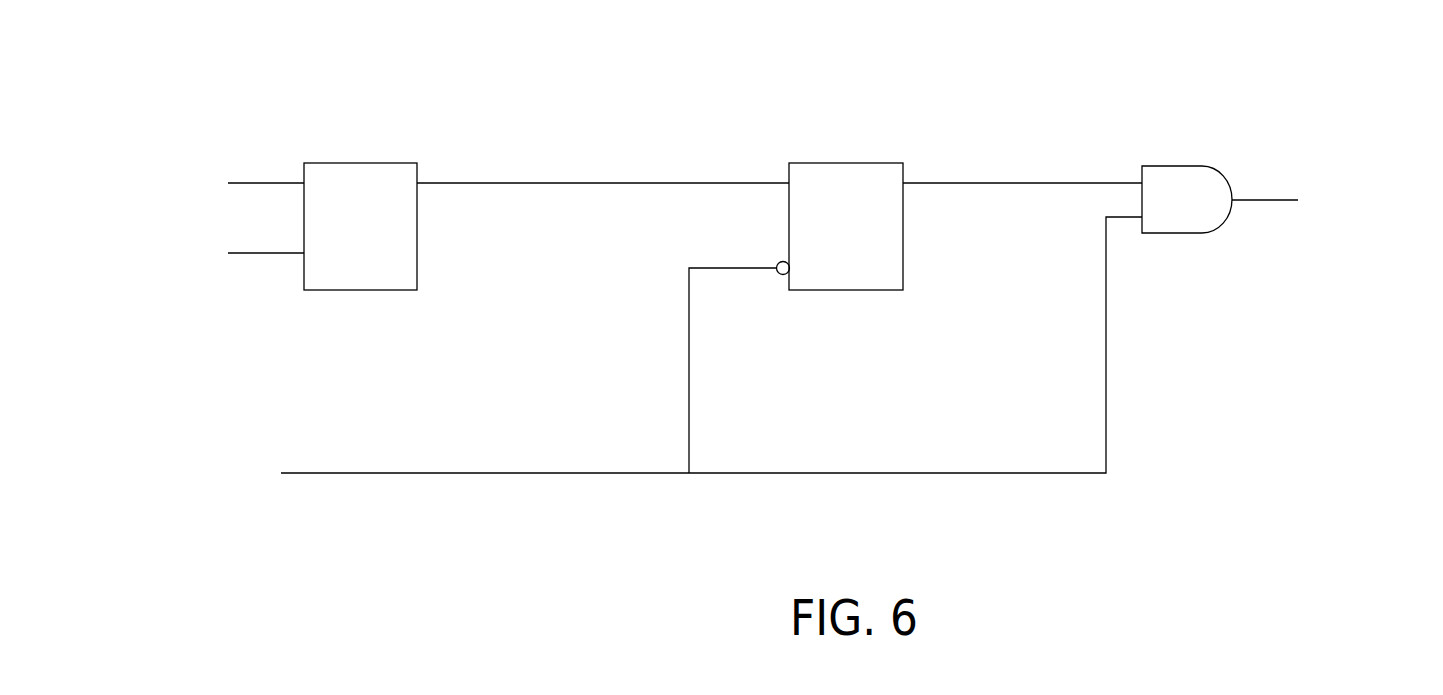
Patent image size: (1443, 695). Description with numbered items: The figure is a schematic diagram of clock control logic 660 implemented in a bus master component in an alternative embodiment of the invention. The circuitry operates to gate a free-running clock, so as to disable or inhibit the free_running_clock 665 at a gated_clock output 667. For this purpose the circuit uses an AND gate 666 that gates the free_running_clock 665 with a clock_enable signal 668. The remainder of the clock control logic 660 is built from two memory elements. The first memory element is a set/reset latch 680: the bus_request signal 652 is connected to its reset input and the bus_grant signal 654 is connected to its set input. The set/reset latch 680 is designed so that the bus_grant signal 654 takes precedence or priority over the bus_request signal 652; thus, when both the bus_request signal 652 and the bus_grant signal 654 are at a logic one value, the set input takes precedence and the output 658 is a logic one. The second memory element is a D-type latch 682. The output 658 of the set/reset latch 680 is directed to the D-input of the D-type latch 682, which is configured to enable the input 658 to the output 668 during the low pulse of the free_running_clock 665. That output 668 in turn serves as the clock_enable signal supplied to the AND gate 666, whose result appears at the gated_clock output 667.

The clock control logic 660 is at (953, 54).
The set/reset latch 680 is at (362, 163).
The bus_grant signal 654 is at (247, 183).
The bus_request signal 652 is at (242, 253).
The output of the set/reset latch 658 is at (592, 183).
The D-type latch 682 is at (843, 163).
The clock_enable signal 668 is at (1041, 183).
The AND gate 666 is at (1186, 166).
The gated_clock output 667 is at (1252, 200).
The free_running_clock 665 is at (367, 473).